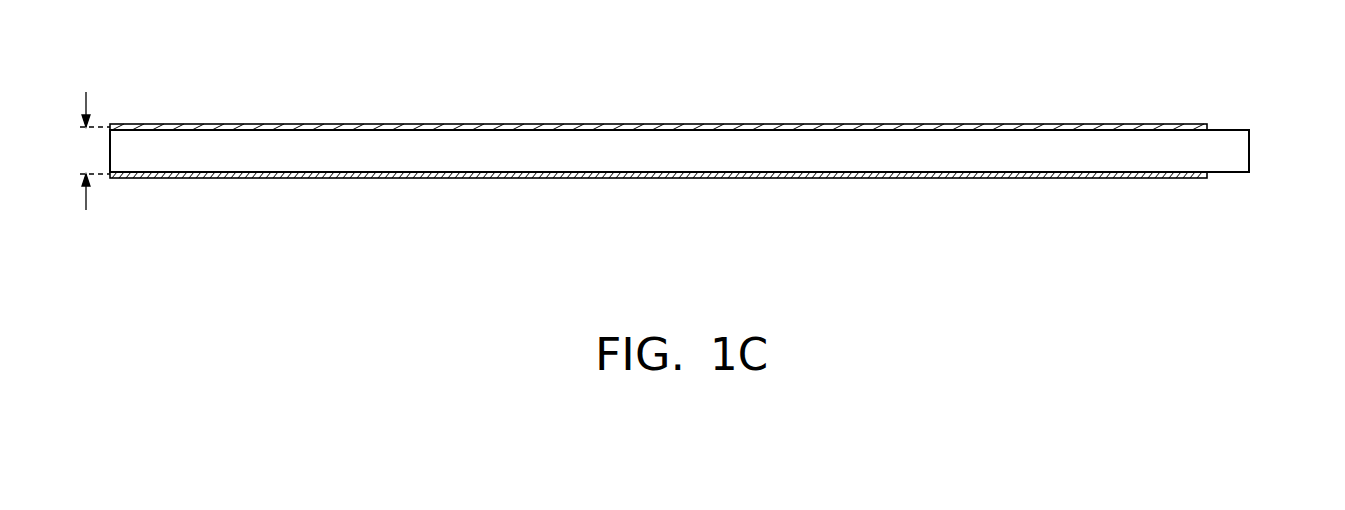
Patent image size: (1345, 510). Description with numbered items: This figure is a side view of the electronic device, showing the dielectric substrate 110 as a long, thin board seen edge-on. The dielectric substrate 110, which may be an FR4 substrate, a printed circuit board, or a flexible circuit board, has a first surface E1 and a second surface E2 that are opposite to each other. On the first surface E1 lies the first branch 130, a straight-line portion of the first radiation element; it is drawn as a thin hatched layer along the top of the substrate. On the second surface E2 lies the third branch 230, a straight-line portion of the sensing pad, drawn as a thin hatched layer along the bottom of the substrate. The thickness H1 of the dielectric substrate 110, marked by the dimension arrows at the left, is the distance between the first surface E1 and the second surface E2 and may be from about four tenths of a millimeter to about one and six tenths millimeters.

The dielectric substrate 110 is at (1249, 150).
The first branch 130 is at (658, 123).
The third branch 230 is at (663, 178).
The first surface E1 is at (1225, 125).
The second surface E2 is at (1227, 178).
The thickness H1 is at (77, 151).